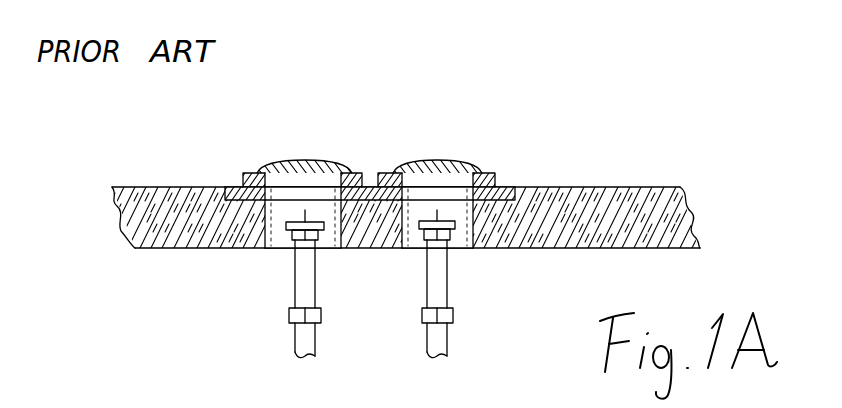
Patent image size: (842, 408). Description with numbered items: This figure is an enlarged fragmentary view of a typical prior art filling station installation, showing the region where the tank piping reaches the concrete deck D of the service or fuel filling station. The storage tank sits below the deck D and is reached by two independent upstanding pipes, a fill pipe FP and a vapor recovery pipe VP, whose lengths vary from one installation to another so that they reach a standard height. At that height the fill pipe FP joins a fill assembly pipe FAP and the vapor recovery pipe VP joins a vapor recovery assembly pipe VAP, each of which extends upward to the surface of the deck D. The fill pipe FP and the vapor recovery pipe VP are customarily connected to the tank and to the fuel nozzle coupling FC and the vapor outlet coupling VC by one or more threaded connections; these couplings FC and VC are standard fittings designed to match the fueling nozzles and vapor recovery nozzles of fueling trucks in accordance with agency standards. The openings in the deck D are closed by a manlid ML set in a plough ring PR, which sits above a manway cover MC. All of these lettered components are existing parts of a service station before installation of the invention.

The concrete deck D is at (137, 187).
The plough ring PR is at (245, 184).
The manlid ML is at (300, 160).
The manway cover MC is at (512, 187).
The fuel nozzle coupling FC is at (291, 235).
The fill assembly pipe FAP is at (293, 283).
The fill pipe FP is at (294, 342).
The vapor recovery assembly pipe VAP is at (448, 285).
The vapor outlet coupling VC is at (455, 223).
The vapor recovery pipe VP is at (449, 340).